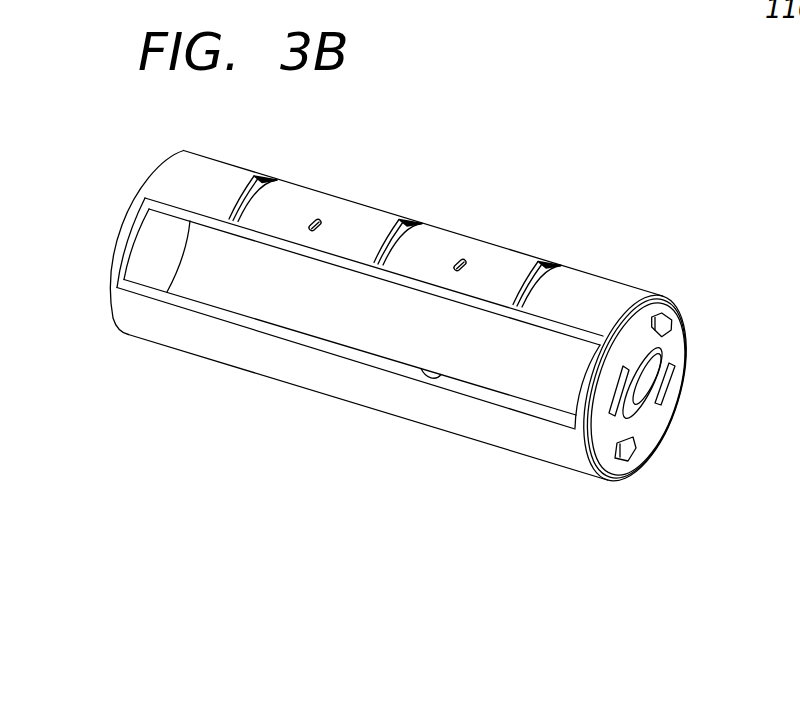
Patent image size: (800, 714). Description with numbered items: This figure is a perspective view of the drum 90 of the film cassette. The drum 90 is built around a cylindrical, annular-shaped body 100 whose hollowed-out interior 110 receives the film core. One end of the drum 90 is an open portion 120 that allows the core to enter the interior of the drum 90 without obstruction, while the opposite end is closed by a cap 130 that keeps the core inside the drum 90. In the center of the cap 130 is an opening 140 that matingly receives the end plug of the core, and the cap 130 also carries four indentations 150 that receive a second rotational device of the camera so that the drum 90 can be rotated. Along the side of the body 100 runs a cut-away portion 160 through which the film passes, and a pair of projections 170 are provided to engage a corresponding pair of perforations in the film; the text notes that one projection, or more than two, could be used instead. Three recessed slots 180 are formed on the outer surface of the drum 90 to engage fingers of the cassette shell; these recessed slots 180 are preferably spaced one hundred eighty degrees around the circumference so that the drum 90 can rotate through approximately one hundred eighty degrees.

The drum 90 is at (506, 118).
The body 100 is at (608, 288).
The hollowed-out interior 110 is at (361, 323).
The open portion 120 is at (146, 259).
The cap 130 is at (674, 338).
The opening 140 is at (652, 387).
The indentations 150 is at (626, 458).
The cut-away portion 160 is at (433, 372).
The projections 170 is at (322, 214).
The recessed slots 180 is at (253, 175).